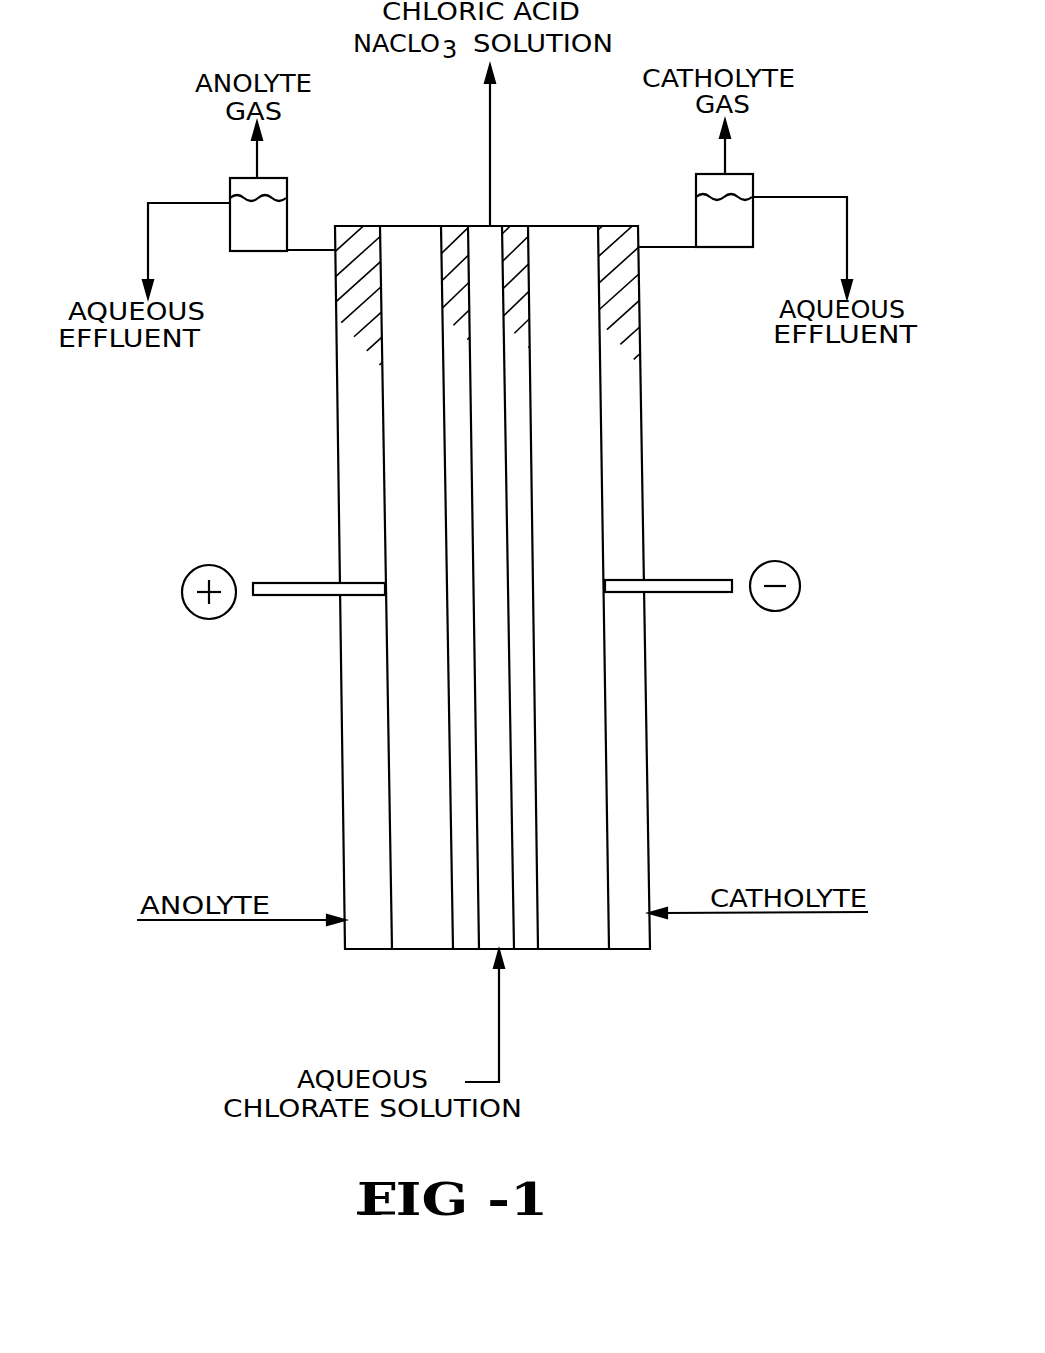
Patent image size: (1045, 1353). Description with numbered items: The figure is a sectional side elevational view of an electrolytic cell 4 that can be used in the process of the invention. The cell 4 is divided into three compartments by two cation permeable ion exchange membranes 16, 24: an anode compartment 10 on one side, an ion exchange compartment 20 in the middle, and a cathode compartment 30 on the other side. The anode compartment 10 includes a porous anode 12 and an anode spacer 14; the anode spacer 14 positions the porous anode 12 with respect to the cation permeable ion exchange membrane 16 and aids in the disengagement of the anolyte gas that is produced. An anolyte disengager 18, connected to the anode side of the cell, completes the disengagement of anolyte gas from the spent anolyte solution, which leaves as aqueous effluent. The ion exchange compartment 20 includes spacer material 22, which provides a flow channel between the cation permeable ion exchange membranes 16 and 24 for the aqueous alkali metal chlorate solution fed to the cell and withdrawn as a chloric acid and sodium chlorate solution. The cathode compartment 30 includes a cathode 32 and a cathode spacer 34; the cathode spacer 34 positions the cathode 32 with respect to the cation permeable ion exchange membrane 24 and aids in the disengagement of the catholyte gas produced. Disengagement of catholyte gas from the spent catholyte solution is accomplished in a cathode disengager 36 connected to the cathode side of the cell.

The electrolytic cell 4 is at (330, 812).
The anode compartment 10 is at (377, 212).
The anode 12 is at (420, 930).
The anode spacer 14 is at (350, 448).
The cation permeable ion exchange membrane 16 is at (453, 237).
The anolyte disengager 18 is at (268, 241).
The ion exchange compartment 20 is at (497, 617).
The spacer material 22 is at (492, 237).
The cation permeable ion exchange membrane 24 is at (527, 938).
The cathode compartment 30 is at (610, 966).
The cathode 32 is at (573, 237).
The cathode spacer 34 is at (633, 697).
The cathode disengager 36 is at (722, 236).